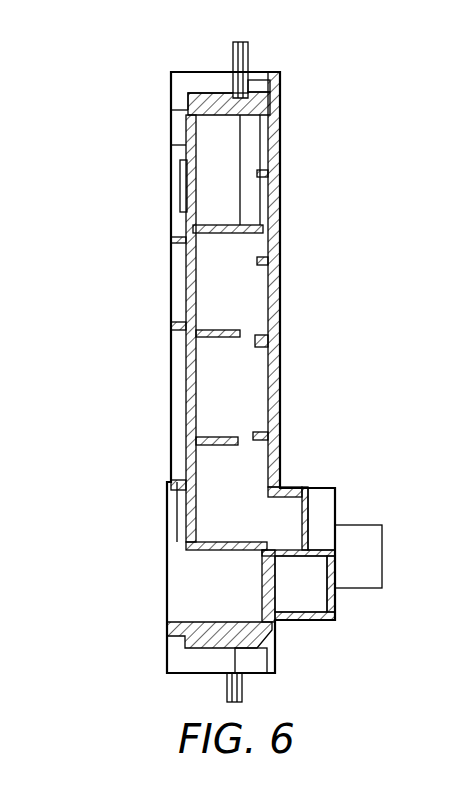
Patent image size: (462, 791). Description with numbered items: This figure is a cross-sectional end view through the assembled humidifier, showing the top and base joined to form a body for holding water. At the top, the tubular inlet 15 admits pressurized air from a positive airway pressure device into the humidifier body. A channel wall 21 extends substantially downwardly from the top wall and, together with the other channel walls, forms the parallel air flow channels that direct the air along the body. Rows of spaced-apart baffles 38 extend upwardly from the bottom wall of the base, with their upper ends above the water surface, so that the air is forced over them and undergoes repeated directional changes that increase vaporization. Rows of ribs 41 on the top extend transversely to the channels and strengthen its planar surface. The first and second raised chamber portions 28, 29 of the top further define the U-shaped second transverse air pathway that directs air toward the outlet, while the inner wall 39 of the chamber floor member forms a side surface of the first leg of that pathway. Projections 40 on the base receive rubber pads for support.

The channel wall 21 is at (203, 372).
The projections 40 is at (180, 196).
The baffles 38 is at (187, 326).
The ribs 41 is at (276, 330).
The inner wall 39 is at (203, 540).
The first raised chamber portion 28 is at (308, 500).
The tubular inlet 15 is at (382, 558).
The second raised chamber portion 29 is at (335, 598).